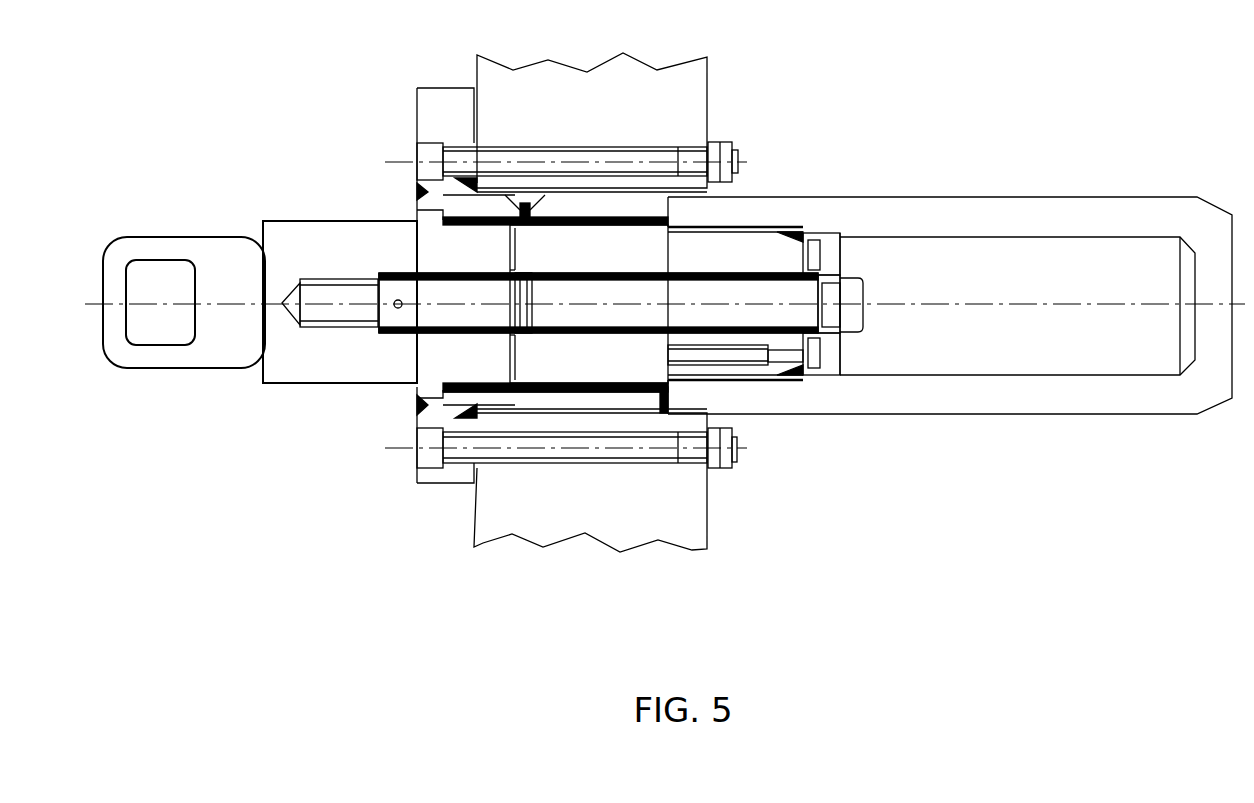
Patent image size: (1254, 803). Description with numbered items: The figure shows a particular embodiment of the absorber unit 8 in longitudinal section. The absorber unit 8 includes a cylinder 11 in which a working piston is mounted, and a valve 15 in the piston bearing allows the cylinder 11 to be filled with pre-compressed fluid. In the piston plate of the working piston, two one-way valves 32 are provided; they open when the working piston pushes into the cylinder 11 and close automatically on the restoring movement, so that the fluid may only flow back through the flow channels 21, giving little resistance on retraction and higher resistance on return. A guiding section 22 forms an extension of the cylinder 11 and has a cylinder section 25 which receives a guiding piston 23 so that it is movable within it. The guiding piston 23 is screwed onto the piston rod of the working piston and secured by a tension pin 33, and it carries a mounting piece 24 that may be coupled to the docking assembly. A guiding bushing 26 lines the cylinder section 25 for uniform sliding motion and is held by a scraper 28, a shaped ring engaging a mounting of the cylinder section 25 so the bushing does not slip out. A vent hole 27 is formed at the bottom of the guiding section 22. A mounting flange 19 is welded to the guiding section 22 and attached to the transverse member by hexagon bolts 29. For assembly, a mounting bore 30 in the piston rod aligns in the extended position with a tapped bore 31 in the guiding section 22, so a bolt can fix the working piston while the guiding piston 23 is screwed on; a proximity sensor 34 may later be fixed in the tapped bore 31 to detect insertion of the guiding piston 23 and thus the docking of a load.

The absorber unit 8 is at (762, 166).
The cylinder 11 is at (965, 213).
The valve 15 is at (753, 358).
The mounting flange 19 is at (438, 98).
The flow channels 21 is at (847, 272).
The guiding section 22 is at (395, 211).
The guiding piston 23 is at (305, 238).
The mounting piece 24 is at (162, 247).
The cylinder section 25 is at (627, 207).
The guiding bushing 26 is at (622, 395).
The vent hole 27 is at (668, 413).
The scraper 28 is at (413, 390).
The hexagon bolts 29 is at (507, 450).
The mounting bore 30 is at (528, 280).
The tapped bore 31 is at (507, 192).
The one-way valves 32 is at (822, 235).
The tension pin 33 is at (398, 310).
The proximity sensor 34 is at (530, 200).